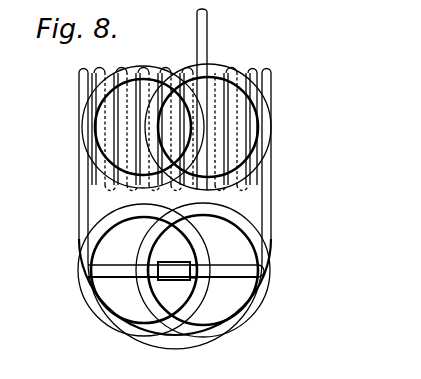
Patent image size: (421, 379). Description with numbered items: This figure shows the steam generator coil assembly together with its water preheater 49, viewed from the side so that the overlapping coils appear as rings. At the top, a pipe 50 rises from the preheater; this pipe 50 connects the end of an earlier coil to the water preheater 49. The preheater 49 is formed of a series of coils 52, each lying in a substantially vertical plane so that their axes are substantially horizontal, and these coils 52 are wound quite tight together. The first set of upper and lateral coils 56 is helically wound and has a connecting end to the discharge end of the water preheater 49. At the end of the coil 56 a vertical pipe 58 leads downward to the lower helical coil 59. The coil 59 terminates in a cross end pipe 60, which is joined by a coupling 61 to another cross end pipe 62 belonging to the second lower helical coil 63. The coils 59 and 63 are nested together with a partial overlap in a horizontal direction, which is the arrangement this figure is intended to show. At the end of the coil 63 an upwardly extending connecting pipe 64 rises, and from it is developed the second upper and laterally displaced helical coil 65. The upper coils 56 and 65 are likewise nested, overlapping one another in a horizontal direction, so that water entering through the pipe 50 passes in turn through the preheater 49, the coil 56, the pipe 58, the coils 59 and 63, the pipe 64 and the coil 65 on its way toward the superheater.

The water preheater 49 is at (181, 201).
The pipe 50 is at (204, 33).
The coils 52 is at (253, 77).
The first set of upper and lateral coils 56 is at (219, 64).
The vertical pipe 58 is at (265, 193).
The lower helical coil 59 is at (257, 298).
The cross end pipe 60 is at (233, 273).
The coupling 61 is at (185, 290).
The cross end pipe 62 is at (125, 278).
The second lower helical coil 63 is at (90, 300).
The connecting pipe 64 is at (86, 194).
The second upper and laterally displaced helical coil 65 is at (86, 122).